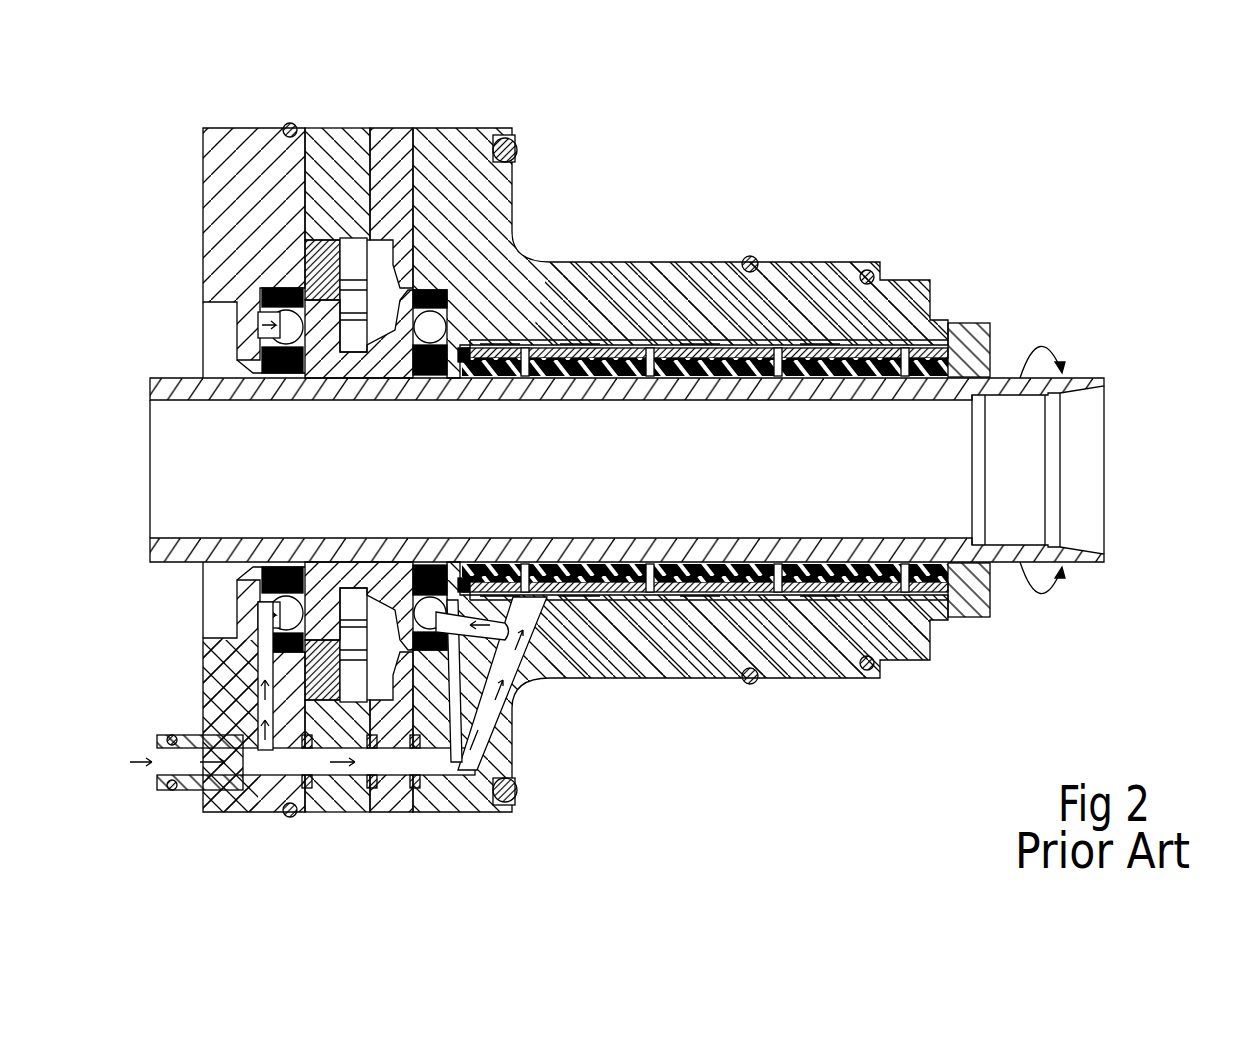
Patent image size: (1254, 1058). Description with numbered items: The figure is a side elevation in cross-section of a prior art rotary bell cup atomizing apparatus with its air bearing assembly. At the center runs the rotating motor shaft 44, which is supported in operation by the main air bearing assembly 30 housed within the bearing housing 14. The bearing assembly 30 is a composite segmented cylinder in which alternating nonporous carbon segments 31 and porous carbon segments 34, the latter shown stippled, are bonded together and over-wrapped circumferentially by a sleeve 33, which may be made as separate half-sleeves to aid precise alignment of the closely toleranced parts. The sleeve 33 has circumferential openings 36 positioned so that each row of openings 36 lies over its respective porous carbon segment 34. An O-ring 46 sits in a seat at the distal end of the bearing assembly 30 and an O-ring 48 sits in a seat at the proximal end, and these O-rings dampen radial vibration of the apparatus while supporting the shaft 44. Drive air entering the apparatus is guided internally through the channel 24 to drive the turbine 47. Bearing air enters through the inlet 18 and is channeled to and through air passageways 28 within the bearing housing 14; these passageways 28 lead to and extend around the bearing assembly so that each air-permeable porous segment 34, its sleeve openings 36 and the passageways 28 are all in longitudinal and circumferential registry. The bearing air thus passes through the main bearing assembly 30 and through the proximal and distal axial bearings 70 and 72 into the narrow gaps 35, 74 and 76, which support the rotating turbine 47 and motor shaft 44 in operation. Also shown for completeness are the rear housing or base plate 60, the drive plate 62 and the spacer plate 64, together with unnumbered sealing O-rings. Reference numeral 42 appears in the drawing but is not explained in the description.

The bearing housing 14 is at (770, 262).
The inlet 18 is at (160, 762).
The channel 24 is at (387, 310).
The air passageways 28 is at (210, 750).
The main air bearing assembly 30 is at (558, 348).
The nonporous carbon segments 31 is at (815, 355).
The sleeve 33 is at (620, 352).
The porous carbon segments 34 is at (645, 578).
The narrow gap 35 is at (676, 355).
The circumferential openings 36 is at (648, 562).
The drain passage 42 is at (735, 405).
The motor shaft 44 is at (178, 378).
The O-ring 46 is at (964, 323).
The turbine 47 is at (322, 630).
The O-ring 48 is at (465, 350).
The rear housing or base plate 60 is at (253, 128).
The drive plate 62 is at (328, 128).
The spacer plate 64 is at (390, 128).
The proximal axial bearing 70 is at (432, 300).
The distal axial bearing 72 is at (285, 300).
The narrow gap 74 is at (322, 590).
The narrow gap 76 is at (378, 600).